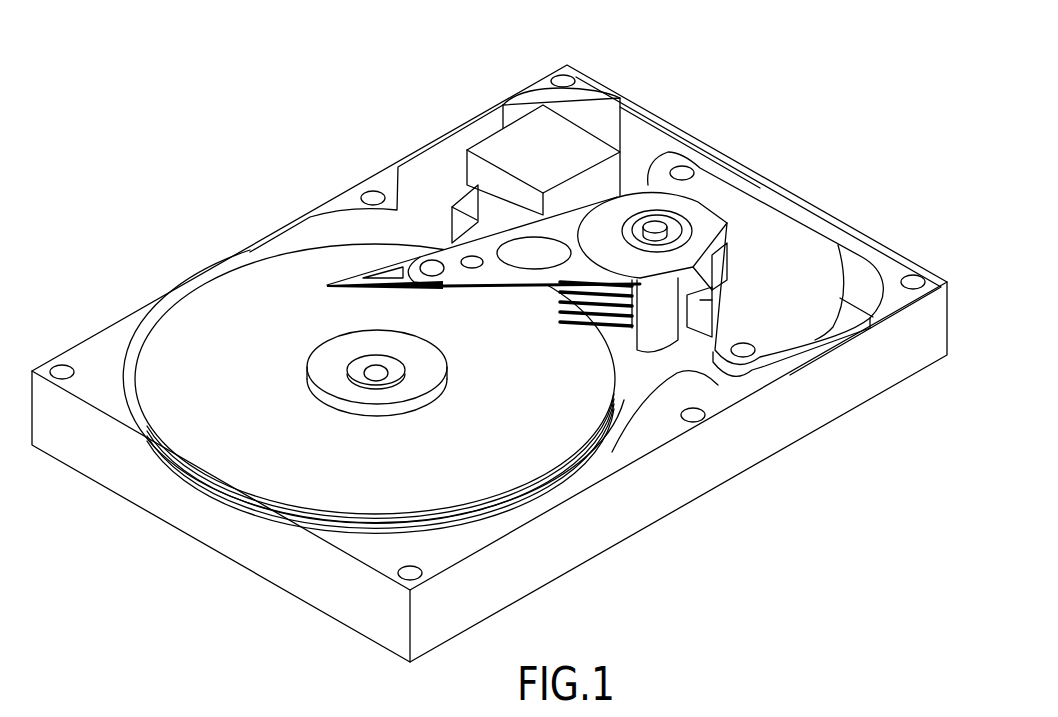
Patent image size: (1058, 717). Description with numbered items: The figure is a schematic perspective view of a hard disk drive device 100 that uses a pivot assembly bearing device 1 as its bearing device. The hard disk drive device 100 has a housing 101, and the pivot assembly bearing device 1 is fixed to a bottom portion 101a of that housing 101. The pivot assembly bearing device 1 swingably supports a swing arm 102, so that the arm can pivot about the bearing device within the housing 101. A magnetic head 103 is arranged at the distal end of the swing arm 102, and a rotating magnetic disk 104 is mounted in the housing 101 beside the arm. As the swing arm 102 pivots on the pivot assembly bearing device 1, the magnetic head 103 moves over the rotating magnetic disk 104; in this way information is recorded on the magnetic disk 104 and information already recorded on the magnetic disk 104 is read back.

The hard disk drive device 100 is at (688, 112).
The housing 101 is at (657, 496).
The bottom portion 101a is at (700, 362).
The swing arm 102 is at (477, 248).
The magnetic head 103 is at (357, 282).
The magnetic disk 104 is at (232, 320).
The pivot assembly bearing device 1 is at (679, 228).